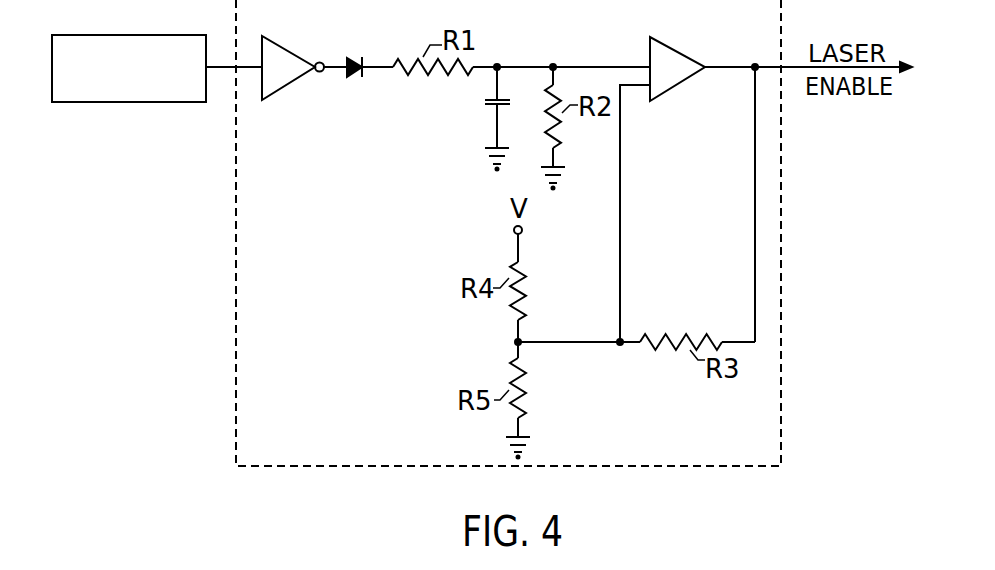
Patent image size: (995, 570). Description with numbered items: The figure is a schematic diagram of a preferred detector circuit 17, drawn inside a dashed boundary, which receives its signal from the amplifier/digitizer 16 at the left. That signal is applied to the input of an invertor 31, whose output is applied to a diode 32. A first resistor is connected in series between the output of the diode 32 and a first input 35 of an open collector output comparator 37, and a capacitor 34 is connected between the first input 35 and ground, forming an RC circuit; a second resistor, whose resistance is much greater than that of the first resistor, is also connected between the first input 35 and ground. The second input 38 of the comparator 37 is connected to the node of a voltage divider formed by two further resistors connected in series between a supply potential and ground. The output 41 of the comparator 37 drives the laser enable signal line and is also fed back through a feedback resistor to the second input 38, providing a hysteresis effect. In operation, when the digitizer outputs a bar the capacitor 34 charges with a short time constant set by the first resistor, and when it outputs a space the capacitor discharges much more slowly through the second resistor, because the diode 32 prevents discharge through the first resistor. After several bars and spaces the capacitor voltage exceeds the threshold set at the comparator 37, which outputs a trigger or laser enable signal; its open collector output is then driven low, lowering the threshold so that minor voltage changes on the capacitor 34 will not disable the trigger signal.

The amplifier/digitizer 16 is at (139, 35).
The detector circuit 17 is at (234, 240).
The invertor 31 is at (286, 51).
The diode 32 is at (359, 56).
The capacitor 34 is at (486, 101).
The first input 35 is at (588, 66).
The open collector output comparator 37 is at (667, 46).
The second input 38 is at (630, 87).
The output 41 is at (729, 67).